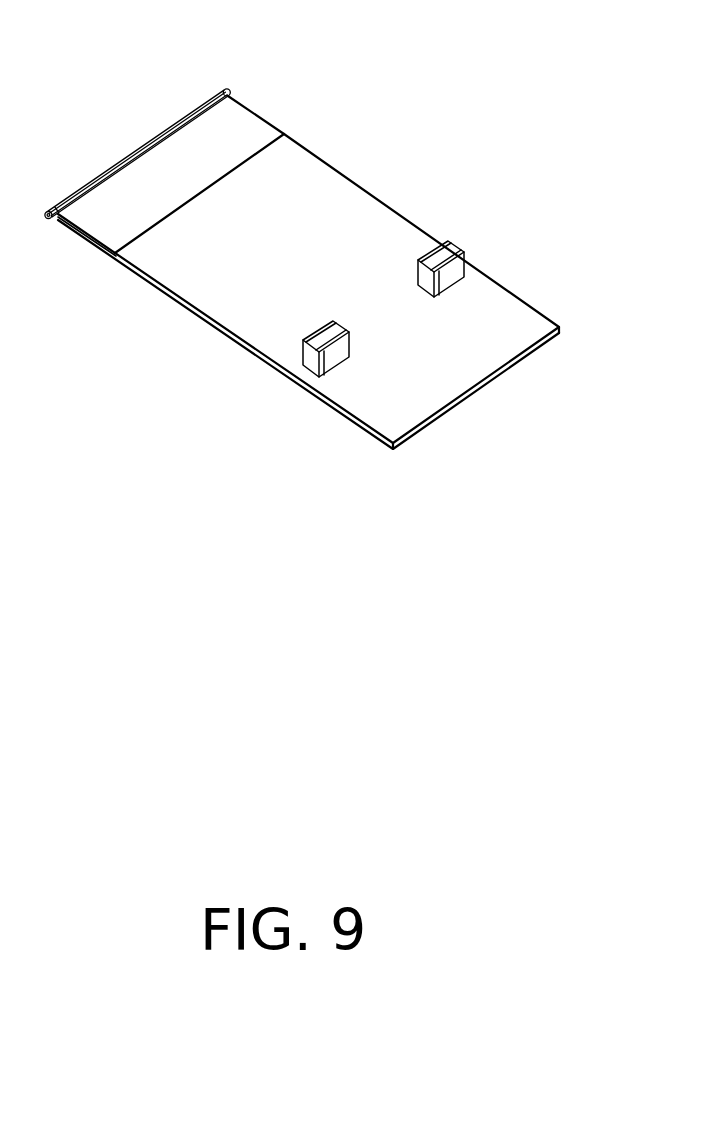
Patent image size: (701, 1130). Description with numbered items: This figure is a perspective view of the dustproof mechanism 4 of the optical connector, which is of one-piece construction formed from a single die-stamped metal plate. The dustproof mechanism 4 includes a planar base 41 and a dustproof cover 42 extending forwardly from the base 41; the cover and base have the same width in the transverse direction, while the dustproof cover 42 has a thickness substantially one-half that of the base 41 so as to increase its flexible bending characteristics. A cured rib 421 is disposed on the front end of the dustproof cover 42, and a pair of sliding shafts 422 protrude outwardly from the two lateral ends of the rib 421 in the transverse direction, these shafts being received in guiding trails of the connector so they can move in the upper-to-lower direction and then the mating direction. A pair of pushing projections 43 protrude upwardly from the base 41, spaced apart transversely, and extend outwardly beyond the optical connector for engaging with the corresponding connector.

The dustproof mechanism 4 is at (302, 228).
The planar base 41 is at (238, 305).
The dustproof cover 42 is at (177, 165).
The cured rib 421 is at (112, 170).
The sliding shafts 422 is at (227, 86).
The pushing projections 43 is at (321, 343).